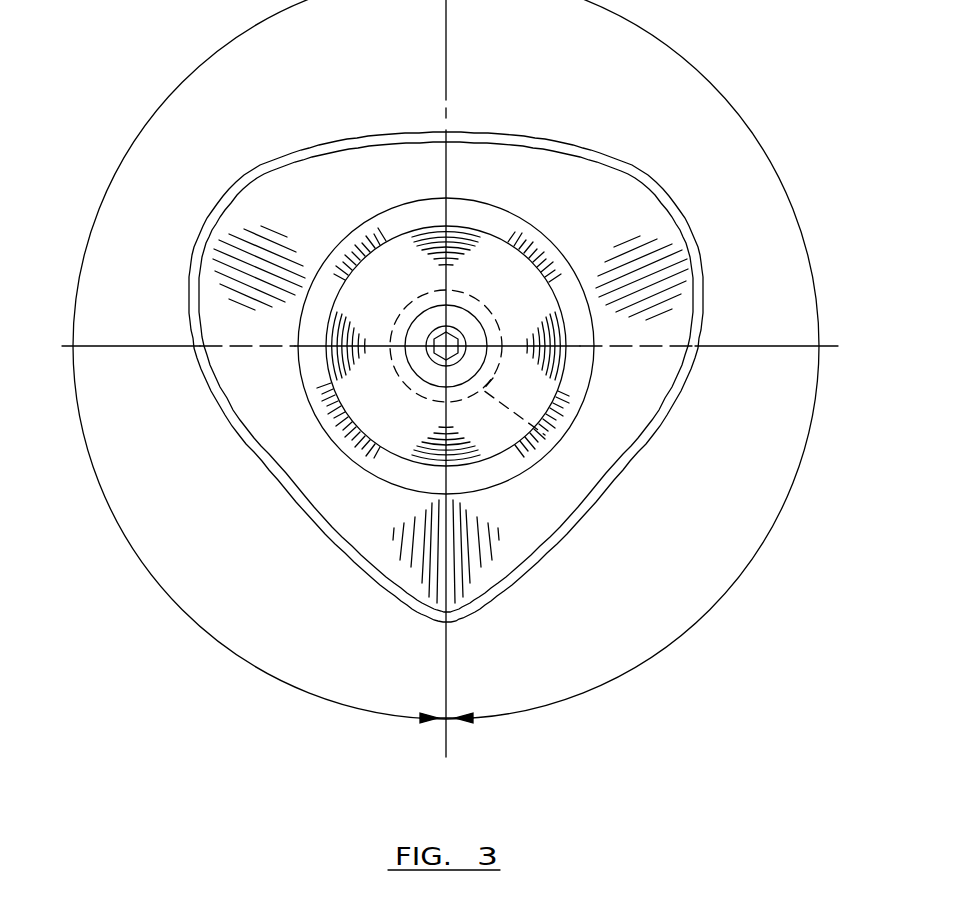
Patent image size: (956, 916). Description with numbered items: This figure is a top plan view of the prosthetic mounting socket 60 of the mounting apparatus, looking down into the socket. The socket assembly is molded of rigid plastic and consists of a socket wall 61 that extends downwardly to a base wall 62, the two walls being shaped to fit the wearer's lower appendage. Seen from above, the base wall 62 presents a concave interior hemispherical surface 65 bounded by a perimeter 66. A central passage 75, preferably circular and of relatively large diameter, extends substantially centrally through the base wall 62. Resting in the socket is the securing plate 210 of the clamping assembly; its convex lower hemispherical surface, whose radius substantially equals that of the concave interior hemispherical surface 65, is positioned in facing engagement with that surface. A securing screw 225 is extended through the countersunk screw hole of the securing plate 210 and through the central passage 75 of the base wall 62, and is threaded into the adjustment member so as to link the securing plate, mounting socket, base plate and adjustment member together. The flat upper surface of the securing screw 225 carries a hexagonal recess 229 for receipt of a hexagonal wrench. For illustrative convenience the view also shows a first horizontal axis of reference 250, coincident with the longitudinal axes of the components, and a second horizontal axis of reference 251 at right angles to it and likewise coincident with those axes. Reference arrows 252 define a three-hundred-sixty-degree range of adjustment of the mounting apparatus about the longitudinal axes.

The prosthetic mounting socket 60 is at (459, 377).
The socket wall 61 is at (652, 417).
The base wall 62 is at (518, 222).
The concave interior hemispherical surface 65 is at (553, 244).
The perimeter 66 is at (572, 262).
The central passage 75 is at (548, 440).
The securing plate 210 is at (350, 365).
The securing screw 225 is at (437, 305).
The hexagonal recess 229 is at (437, 353).
The first horizontal axis of reference 250 is at (446, 53).
The second horizontal axis of reference 251 is at (175, 346).
The reference arrows 252 is at (240, 658).